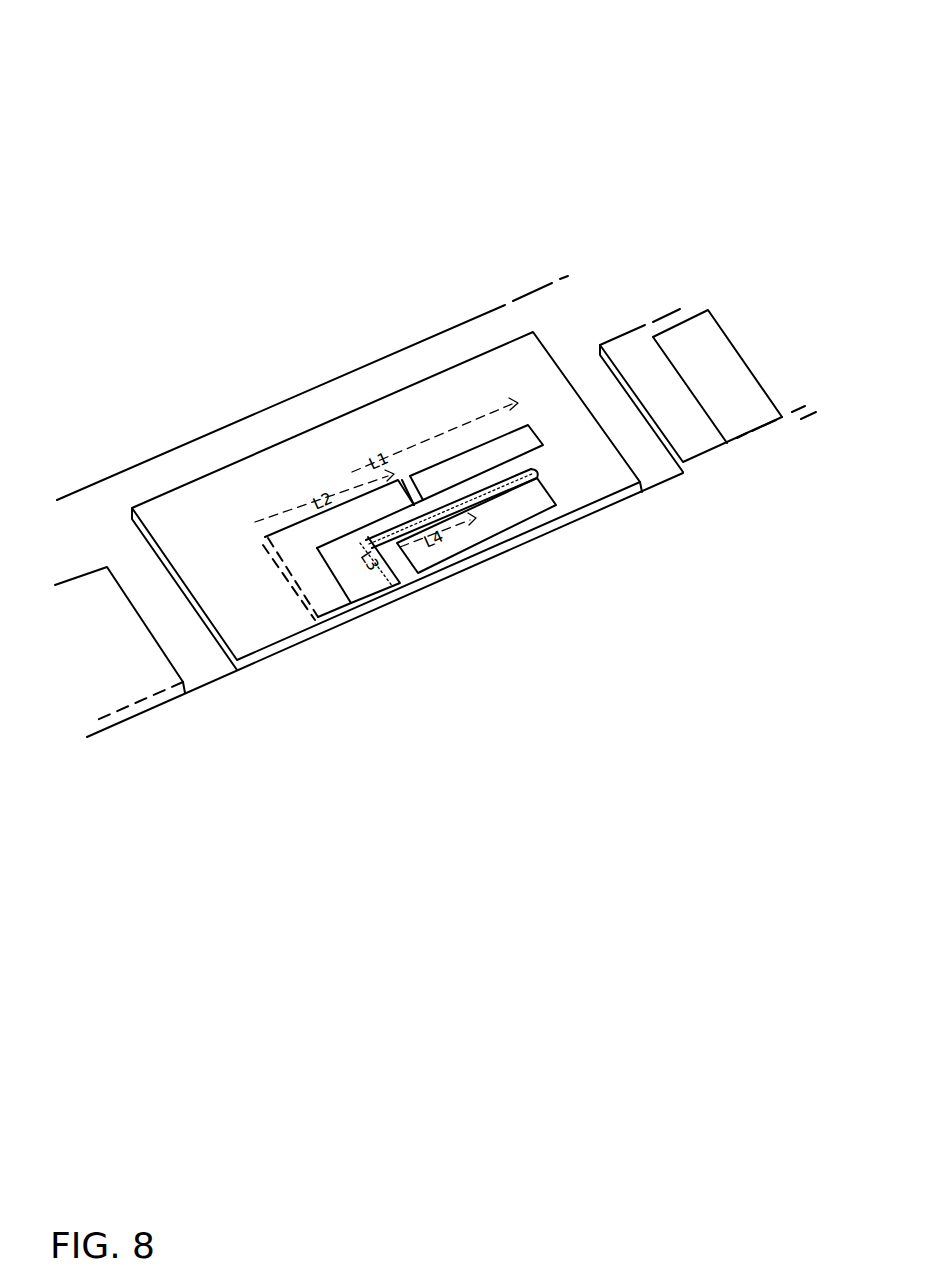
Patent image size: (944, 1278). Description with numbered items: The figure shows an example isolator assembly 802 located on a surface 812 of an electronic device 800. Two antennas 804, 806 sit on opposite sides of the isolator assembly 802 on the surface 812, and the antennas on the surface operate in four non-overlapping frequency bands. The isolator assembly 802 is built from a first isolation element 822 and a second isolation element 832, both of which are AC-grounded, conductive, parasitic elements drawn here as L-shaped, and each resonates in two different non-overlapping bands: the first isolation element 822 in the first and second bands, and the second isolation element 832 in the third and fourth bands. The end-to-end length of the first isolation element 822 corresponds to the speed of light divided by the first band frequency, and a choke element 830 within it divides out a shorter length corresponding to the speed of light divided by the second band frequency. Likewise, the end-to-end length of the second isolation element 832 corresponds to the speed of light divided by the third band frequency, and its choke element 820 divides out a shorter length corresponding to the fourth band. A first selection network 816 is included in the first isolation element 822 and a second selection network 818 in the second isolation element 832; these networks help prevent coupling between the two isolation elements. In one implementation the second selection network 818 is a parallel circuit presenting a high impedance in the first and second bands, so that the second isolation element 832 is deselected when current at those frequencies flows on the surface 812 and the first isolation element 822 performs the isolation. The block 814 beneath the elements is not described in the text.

The electronic device 800 is at (124, 40).
The isolator assembly 802 is at (345, 478).
The antenna 804 is at (100, 600).
The antenna 806 is at (640, 350).
The surface 812 is at (445, 338).
The dielectric block 814 is at (248, 470).
The first selection network 816 is at (340, 607).
The second selection network 818 is at (410, 578).
The choke element 820 is at (478, 498).
The first isolation element 822 is at (283, 548).
The choke element 830 is at (410, 490).
The second isolation element 832 is at (507, 470).